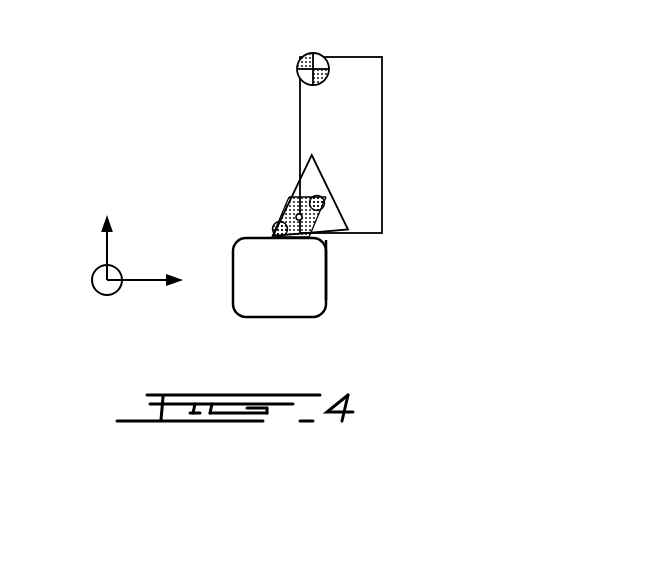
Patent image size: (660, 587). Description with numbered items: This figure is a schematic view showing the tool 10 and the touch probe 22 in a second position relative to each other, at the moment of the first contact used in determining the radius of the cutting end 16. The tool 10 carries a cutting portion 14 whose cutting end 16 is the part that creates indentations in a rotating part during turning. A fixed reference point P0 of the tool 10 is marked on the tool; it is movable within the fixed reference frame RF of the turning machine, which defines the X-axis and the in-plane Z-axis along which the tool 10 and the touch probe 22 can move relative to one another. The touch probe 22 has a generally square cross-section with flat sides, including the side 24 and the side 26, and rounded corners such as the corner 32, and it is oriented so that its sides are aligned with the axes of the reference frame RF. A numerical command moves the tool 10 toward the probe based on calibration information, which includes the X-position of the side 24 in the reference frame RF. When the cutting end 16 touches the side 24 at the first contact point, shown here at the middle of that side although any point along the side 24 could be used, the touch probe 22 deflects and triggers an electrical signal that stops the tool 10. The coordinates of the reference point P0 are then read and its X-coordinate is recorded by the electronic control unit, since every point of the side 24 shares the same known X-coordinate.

The tool 10 is at (390, 126).
The reference point P0 is at (319, 55).
The cutting portion 14 is at (368, 249).
The cutting end 16 is at (268, 216).
The touch probe 22 is at (334, 320).
The side 24 is at (257, 238).
The side 26 is at (326, 282).
The corner 32 is at (326, 245).
The reference frame RF is at (133, 303).